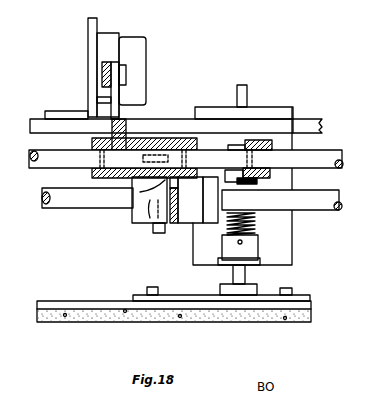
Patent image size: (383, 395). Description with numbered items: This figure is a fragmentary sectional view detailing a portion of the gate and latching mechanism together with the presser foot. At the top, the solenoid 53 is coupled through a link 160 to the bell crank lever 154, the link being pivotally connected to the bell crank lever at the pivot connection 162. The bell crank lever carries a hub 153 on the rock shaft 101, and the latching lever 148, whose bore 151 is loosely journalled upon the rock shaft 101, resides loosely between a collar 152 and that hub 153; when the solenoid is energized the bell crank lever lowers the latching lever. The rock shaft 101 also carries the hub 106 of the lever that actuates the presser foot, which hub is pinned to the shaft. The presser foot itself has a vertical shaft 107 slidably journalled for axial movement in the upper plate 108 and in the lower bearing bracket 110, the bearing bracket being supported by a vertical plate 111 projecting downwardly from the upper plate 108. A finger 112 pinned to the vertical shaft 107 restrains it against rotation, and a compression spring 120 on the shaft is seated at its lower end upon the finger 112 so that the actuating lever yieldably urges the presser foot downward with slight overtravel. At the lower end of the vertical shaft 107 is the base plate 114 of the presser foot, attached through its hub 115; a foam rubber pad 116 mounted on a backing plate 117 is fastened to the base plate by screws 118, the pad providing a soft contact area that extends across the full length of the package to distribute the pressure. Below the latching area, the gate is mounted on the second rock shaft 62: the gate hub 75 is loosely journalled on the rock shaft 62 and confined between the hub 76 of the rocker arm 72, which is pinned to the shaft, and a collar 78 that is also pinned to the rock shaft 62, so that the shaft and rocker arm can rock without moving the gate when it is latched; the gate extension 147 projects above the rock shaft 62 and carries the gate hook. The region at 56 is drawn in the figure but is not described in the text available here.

The solenoid 53 is at (112, 35).
The link 160 is at (101, 72).
The pivot connection 162 is at (126, 72).
The hub 153 is at (137, 130).
The bell crank lever 154 is at (114, 99).
The latching lever 148 is at (165, 133).
The upper plate 108 is at (305, 123).
The compression spring 120 is at (253, 182).
The collar 152 is at (195, 130).
The vertical shaft 107 is at (247, 93).
The rock shaft 101 is at (322, 154).
The hub 106 is at (272, 145).
The rock shaft 62 is at (56, 192).
The bore 151 is at (162, 178).
The extension 147 is at (195, 210).
The hub 76 is at (154, 230).
The rocker arm 72 is at (162, 233).
The hub 75 is at (184, 223).
The collar 78 is at (210, 223).
The vertical plate 111 is at (255, 220).
The finger 112 is at (258, 243).
The bearing bracket 110 is at (260, 260).
The base plate 114 is at (205, 297).
The hub 115 is at (285, 290).
The screws 118 is at (147, 291).
The pad 116 is at (312, 317).
The backing plate 117 is at (54, 300).
The table 56 is at (73, 294).